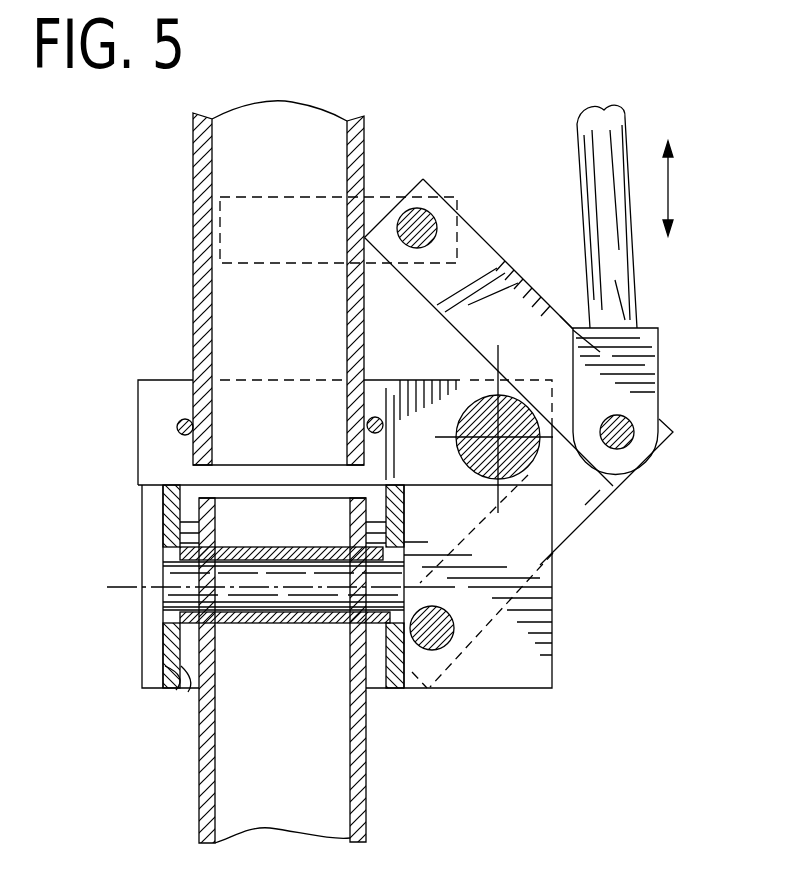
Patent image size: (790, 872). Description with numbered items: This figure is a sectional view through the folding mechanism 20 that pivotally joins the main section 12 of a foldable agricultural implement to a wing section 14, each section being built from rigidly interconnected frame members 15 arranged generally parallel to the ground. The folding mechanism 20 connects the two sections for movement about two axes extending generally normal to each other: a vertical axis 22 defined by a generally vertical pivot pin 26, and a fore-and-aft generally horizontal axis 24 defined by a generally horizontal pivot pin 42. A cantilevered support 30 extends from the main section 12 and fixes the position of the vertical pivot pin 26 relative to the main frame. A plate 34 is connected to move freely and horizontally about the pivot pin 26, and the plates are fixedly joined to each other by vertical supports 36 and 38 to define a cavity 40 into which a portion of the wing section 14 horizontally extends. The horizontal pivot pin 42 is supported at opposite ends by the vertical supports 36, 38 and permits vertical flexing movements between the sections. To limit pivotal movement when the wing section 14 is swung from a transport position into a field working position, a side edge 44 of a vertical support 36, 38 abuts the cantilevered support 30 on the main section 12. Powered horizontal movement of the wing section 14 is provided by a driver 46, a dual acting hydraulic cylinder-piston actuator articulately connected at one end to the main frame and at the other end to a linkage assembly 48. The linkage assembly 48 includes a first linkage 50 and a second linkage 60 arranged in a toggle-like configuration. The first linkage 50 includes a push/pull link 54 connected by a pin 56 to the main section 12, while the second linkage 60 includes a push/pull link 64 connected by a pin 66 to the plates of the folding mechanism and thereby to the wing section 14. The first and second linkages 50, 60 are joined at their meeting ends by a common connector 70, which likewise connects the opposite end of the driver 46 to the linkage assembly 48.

The main section 12 is at (186, 147).
The wing section 14 is at (195, 785).
The frame members 15 is at (207, 213).
The folding mechanism 20 is at (560, 670).
The vertical axis 22 is at (500, 438).
The horizontal axis 24 is at (123, 590).
The vertical pivot pin 26 is at (480, 400).
The cantilevered support 30 is at (146, 422).
The plate 34 is at (144, 656).
The vertical support 36 is at (398, 689).
The vertical support 38 is at (182, 668).
The cavity 40 is at (183, 668).
The horizontal pivot pin 42 is at (163, 562).
The side edge 44 is at (168, 484).
The driver 46 is at (574, 176).
The linkage assembly 48 is at (666, 461).
The first linkage 50 is at (510, 252).
The push/pull link 54 is at (548, 327).
The pin 56 is at (423, 218).
The second linkage 60 is at (579, 548).
The push/pull link 64 is at (585, 505).
The pin 66 is at (432, 628).
The common connector 70 is at (622, 432).